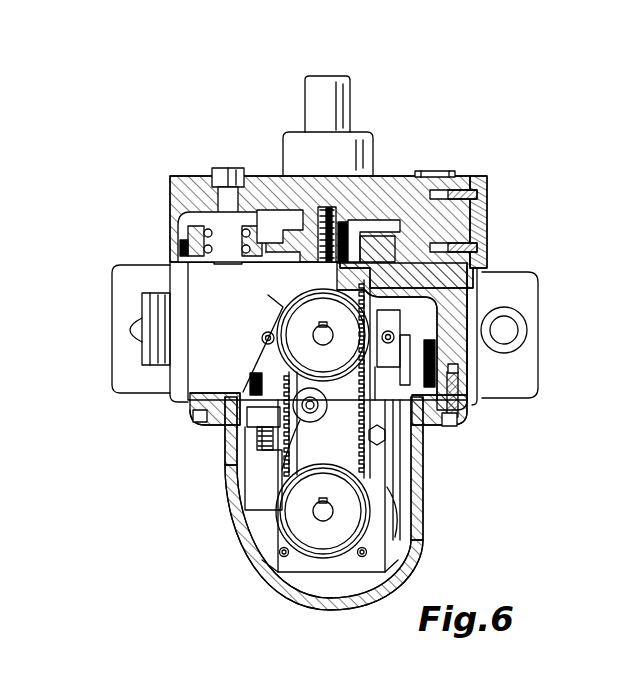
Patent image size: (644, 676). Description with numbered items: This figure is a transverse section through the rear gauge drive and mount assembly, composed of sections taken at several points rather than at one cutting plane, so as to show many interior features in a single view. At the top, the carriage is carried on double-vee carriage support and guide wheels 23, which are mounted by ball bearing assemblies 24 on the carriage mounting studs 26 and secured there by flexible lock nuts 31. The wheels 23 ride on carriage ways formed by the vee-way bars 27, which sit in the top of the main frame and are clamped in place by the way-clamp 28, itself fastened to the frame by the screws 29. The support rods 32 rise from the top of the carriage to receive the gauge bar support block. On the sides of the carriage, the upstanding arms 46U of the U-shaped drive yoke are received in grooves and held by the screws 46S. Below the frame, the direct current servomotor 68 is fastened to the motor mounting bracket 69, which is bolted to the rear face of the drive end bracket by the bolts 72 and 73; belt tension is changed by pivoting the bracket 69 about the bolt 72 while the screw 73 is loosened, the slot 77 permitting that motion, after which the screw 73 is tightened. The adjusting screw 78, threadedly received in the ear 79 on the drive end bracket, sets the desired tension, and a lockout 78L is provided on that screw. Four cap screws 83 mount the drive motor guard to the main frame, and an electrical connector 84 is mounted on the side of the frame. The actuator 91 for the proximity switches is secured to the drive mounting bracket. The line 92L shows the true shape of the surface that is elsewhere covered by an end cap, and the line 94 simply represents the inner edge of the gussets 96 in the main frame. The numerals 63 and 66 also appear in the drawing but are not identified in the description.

The double-vee carriage support and guide wheels 23 is at (190, 245).
The ball bearing assemblies 24 is at (196, 228).
The carriage mounting studs 26 is at (228, 170).
The vee-way bars 27 is at (280, 235).
The way-clamp 28 is at (293, 225).
The screws 29 is at (331, 225).
The flexible lock nuts 31 is at (138, 268).
The support rods 32 is at (320, 100).
The screws 46S is at (482, 196).
The upstanding arms 46U is at (480, 318).
The screw 63 is at (262, 332).
The fastener 66 is at (513, 412).
The DC servomotor 68 is at (300, 575).
The motor mounting bracket 69 is at (385, 532).
The bolt 72 is at (380, 445).
The bolt 73 is at (282, 457).
The slot 77 is at (300, 420).
The adjusting screw 78 is at (258, 440).
The lockout 78L is at (247, 387).
The ear 79 is at (256, 418).
The cap screws 83 is at (192, 416).
The electrical connector 84 is at (160, 311).
The actuator 91 is at (428, 418).
The line 92L is at (250, 360).
The line 94 is at (404, 352).
The gussets 96 is at (427, 310).